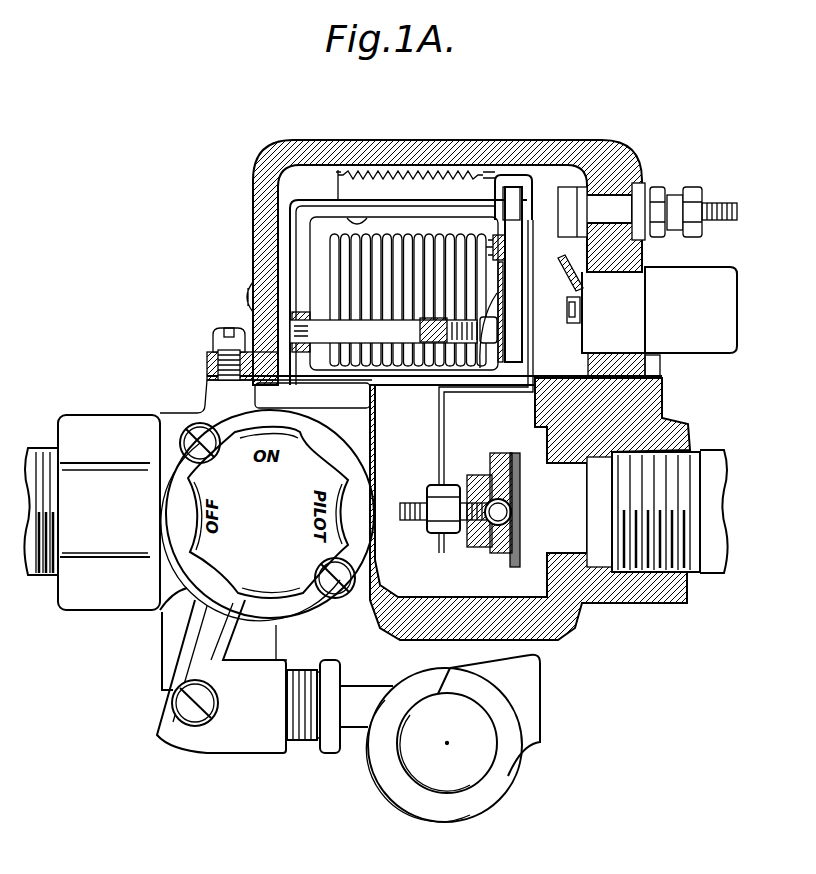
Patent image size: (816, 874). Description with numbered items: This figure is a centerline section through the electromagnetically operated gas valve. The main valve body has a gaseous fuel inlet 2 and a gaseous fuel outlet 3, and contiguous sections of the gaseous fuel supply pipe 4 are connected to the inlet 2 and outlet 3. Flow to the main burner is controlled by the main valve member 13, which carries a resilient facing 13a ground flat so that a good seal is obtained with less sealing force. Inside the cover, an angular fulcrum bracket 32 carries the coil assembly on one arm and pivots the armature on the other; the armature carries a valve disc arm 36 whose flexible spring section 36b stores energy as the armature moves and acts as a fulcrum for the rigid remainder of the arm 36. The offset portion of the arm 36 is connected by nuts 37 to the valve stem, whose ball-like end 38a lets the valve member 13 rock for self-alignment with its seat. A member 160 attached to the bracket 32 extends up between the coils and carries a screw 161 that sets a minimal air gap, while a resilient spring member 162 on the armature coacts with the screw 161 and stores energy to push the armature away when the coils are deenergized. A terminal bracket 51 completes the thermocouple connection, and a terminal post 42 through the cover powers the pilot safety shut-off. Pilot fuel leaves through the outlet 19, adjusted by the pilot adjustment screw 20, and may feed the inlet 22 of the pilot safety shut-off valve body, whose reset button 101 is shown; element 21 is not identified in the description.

The gaseous fuel inlet 2 is at (110, 432).
The gaseous fuel outlet 3 is at (611, 568).
The gaseous fuel supply pipe 4 is at (712, 568).
The main valve member 13 is at (492, 566).
The facing 13a is at (515, 568).
The fuel outlet for the pilot burner 19 is at (236, 745).
The pilot adjustment screw 20 is at (178, 703).
The threaded nipple 21 is at (303, 742).
The inlet of the valve body of the thermoelectric safety shut-off device 22 is at (362, 722).
The angular fulcrum bracket 32 is at (292, 218).
The valve disc arm 36 is at (532, 352).
The flexible spring section 36b is at (500, 225).
The nuts 37 is at (447, 535).
The ball-like end 38a is at (503, 509).
The terminal post 42 is at (568, 193).
The terminal bracket 51 is at (566, 285).
The reset button 101 is at (460, 784).
The member 160 is at (354, 333).
The screw 161 is at (482, 368).
The resilient spring member 162 is at (470, 312).